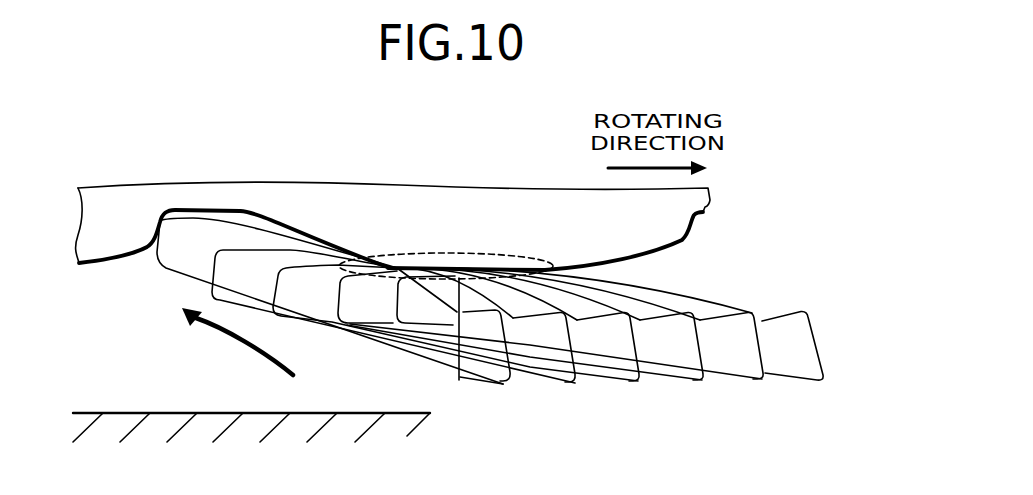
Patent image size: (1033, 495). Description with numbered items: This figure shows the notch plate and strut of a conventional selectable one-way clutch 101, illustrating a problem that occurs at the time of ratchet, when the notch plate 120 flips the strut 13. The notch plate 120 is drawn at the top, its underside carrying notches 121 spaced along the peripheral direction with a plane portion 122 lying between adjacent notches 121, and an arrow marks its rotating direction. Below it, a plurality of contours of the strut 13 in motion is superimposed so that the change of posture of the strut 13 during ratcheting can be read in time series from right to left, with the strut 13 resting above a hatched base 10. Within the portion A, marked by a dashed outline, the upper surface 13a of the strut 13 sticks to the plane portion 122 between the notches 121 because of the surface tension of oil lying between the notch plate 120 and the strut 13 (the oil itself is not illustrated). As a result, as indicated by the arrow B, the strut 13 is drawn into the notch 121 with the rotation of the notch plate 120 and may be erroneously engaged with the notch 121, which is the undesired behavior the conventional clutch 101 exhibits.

The selectable one-way clutch 101 is at (139, 159).
The notch plate 120 is at (735, 200).
The notch 121 is at (221, 207).
The plane portion 122 is at (476, 272).
The strut 13 is at (679, 411).
The upper surface of strut 13a is at (656, 282).
The base / support member 10 is at (128, 413).
The portion A is at (449, 253).
The arrow B is at (233, 355).